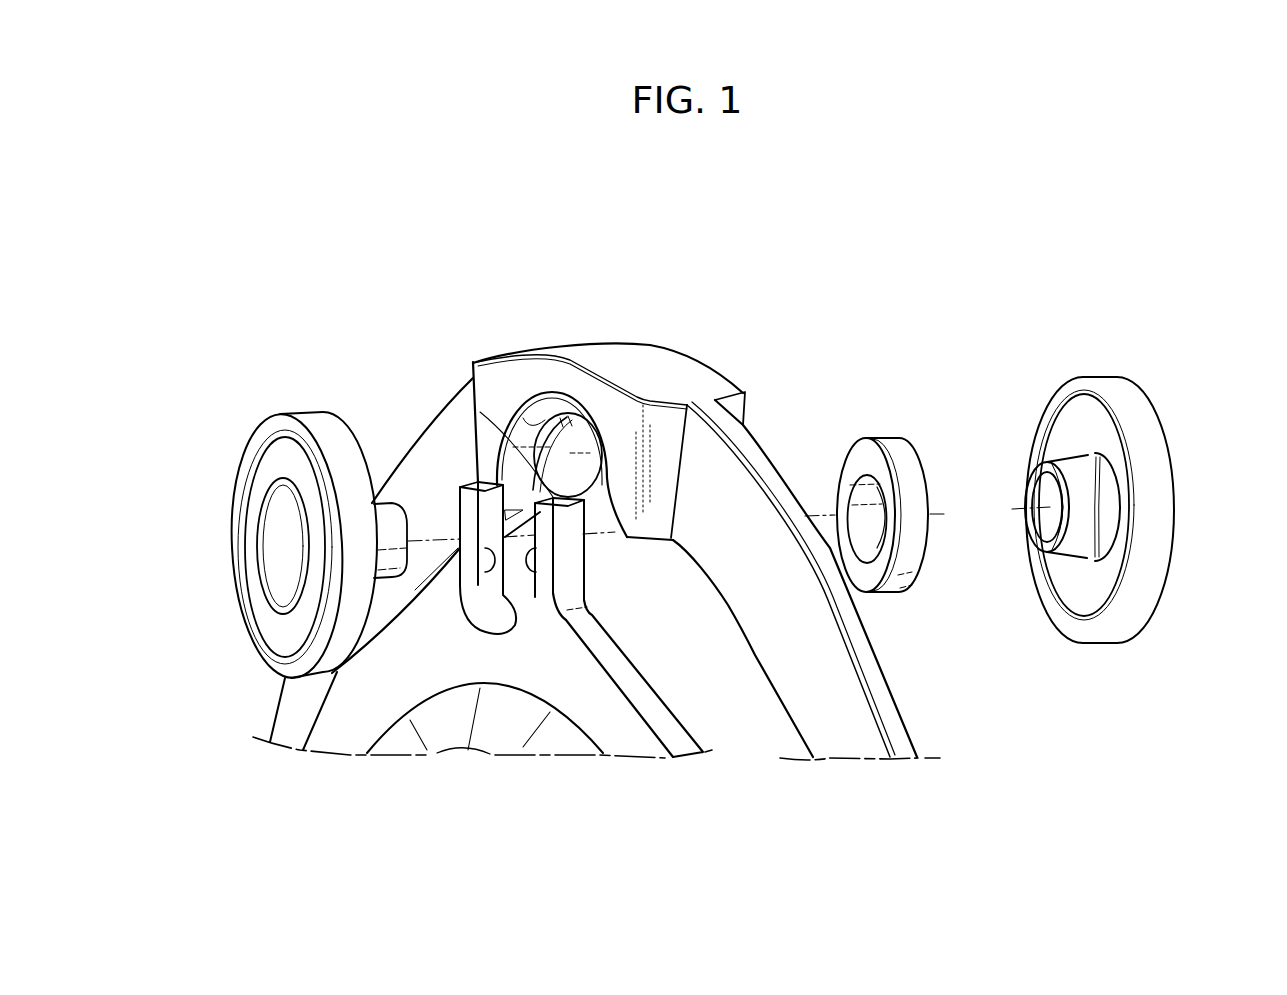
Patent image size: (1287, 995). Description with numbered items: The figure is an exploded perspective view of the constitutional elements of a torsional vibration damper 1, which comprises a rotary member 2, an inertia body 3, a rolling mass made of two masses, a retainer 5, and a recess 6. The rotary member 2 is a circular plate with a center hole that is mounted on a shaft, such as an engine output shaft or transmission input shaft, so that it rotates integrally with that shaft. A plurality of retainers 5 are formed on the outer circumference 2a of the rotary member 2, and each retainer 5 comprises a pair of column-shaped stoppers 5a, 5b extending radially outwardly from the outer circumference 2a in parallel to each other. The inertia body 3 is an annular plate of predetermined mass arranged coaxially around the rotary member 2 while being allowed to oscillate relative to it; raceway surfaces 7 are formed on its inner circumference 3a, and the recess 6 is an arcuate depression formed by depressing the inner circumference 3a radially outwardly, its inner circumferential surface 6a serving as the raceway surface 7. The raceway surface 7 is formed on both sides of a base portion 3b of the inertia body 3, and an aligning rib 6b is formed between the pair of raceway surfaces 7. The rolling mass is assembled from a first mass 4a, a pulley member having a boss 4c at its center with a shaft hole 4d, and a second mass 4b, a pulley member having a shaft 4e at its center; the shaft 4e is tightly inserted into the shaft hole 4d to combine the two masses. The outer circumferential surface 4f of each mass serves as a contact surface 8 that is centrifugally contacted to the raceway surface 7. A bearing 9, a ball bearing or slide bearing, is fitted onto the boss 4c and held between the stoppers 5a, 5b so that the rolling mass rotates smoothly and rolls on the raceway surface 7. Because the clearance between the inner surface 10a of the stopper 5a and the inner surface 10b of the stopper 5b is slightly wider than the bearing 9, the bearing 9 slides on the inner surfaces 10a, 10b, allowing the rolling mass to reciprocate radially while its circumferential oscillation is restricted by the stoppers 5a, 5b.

The torsional vibration damper 1 is at (878, 238).
The rotary member 2 is at (552, 740).
The outer circumference 2a is at (645, 682).
The inertia body 3 is at (908, 667).
The inner circumference 3a is at (723, 597).
The base portion 3b is at (732, 478).
The first mass 4a is at (1157, 480).
The second mass 4b is at (258, 489).
The boss 4c is at (1060, 458).
The shaft hole 4d is at (1047, 527).
The shaft 4e is at (393, 505).
The outer circumferential surface 4f is at (1127, 630).
The contact surface 8 is at (322, 420).
The retainer 5 is at (455, 300).
The stopper 5a is at (474, 483).
The stopper 5b is at (477, 477).
The recess 6 is at (590, 510).
The inner circumferential surface 6a is at (551, 454).
The raceway surface 7 is at (514, 415).
The aligning rib 6b is at (566, 415).
The bearing 9 is at (895, 438).
The inner surface 10a is at (490, 585).
The inner surface 10b is at (532, 572).